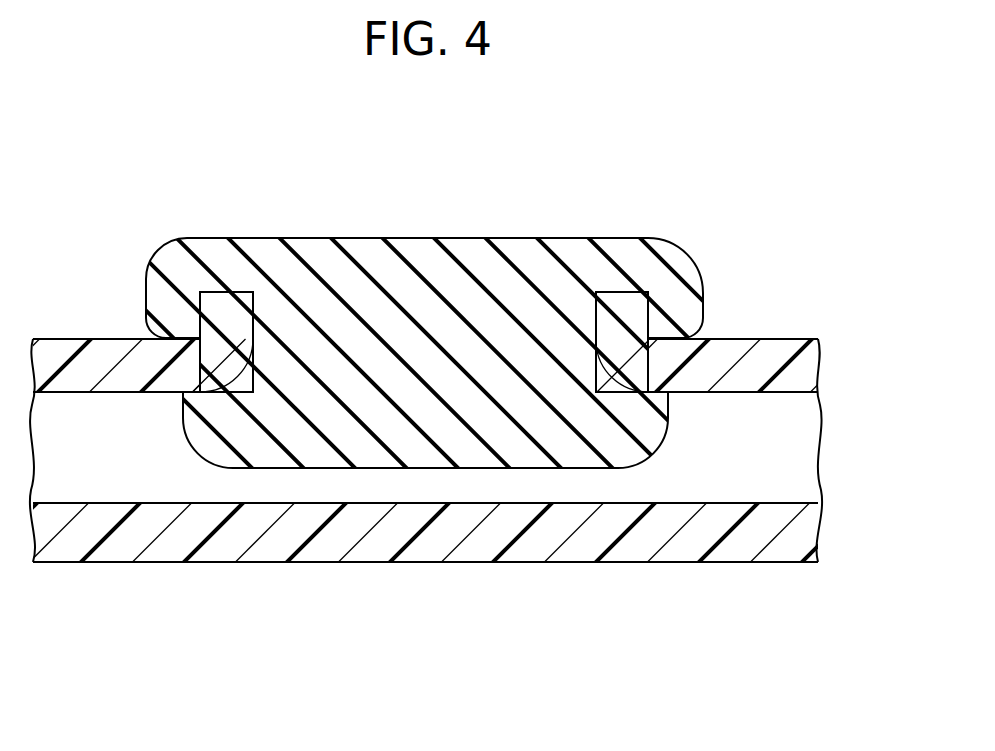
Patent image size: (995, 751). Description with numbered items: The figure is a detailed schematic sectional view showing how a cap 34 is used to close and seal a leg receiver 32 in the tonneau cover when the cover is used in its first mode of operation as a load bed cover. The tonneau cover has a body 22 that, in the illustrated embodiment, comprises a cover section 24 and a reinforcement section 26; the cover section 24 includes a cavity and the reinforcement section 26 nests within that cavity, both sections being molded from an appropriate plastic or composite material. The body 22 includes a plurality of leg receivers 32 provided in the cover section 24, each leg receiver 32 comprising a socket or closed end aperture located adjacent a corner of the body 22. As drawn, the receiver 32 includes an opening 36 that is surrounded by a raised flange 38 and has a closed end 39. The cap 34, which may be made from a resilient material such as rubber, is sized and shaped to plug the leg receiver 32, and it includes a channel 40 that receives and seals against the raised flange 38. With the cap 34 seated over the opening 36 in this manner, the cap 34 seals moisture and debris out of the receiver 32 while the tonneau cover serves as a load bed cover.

The body 22 is at (450, 429).
The cover section 24 is at (772, 355).
The reinforcement section 26 is at (160, 550).
The leg receiver 32 is at (467, 297).
The cap 34 is at (267, 237).
The opening 36 is at (593, 352).
The raised flange 38 is at (213, 302).
The closed end 39 is at (693, 503).
The channel 40 is at (253, 305).